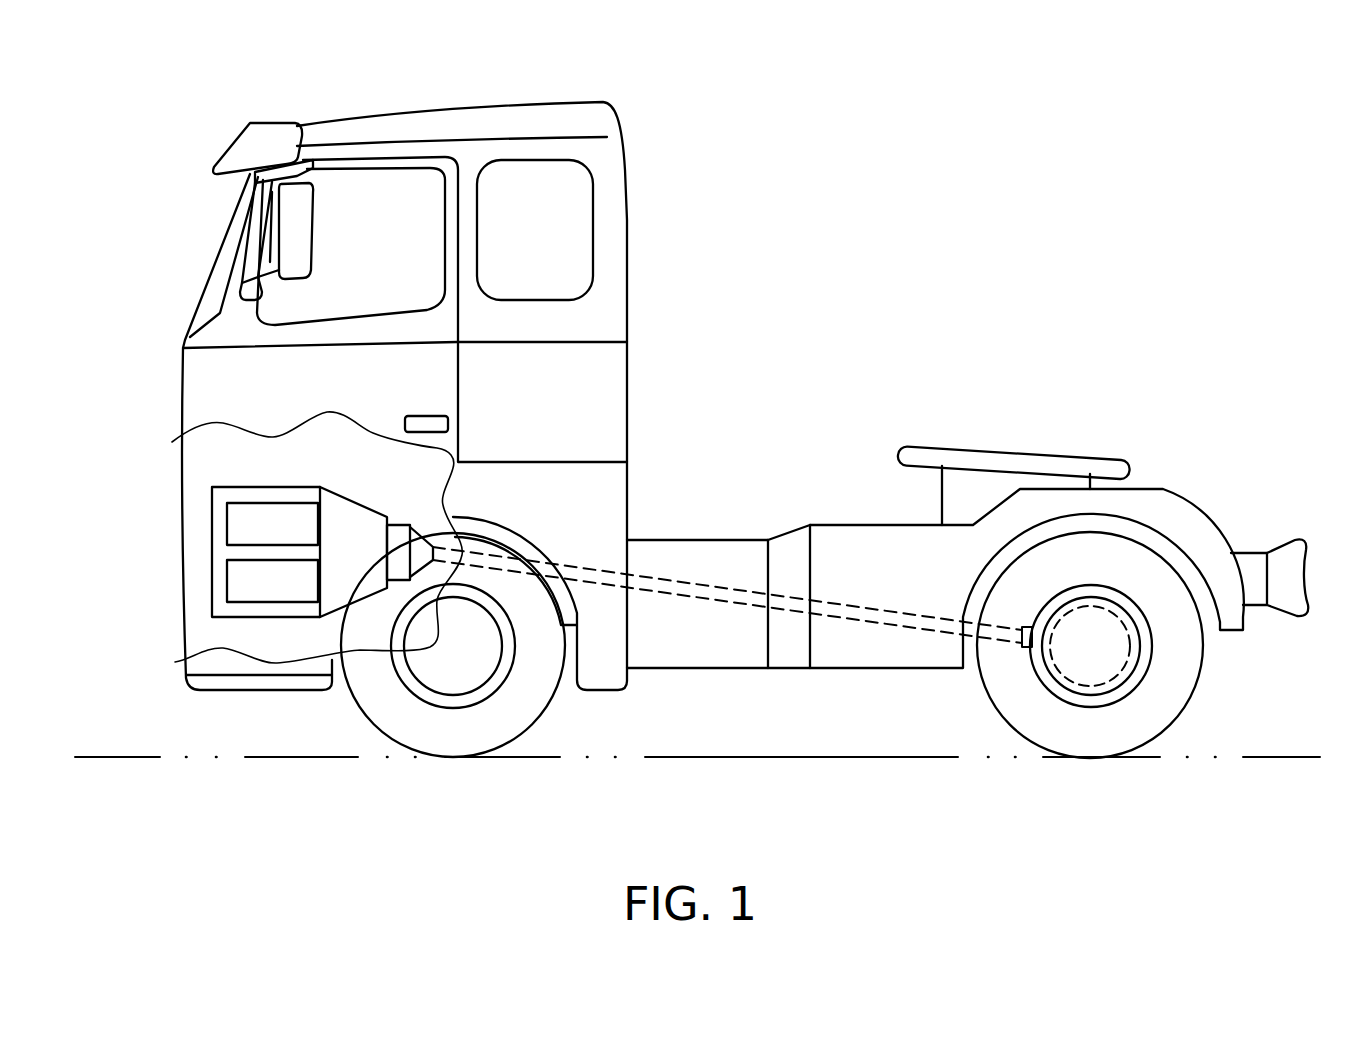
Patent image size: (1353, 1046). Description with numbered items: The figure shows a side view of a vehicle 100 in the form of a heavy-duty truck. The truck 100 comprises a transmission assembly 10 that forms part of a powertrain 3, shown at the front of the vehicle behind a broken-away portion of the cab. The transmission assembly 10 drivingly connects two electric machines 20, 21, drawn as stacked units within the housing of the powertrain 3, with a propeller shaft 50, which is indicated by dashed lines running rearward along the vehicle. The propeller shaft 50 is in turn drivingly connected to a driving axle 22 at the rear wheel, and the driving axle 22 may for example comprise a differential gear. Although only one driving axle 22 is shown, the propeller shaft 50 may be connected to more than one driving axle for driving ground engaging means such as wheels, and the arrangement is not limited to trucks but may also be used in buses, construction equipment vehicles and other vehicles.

The vehicle 100 is at (788, 158).
The powertrain 3 is at (267, 617).
The electric machine 21 is at (225, 524).
The electric machine 20 is at (225, 582).
The transmission assembly 10 is at (353, 560).
The propeller shaft 50 is at (728, 602).
The driving axle 22 is at (1091, 645).